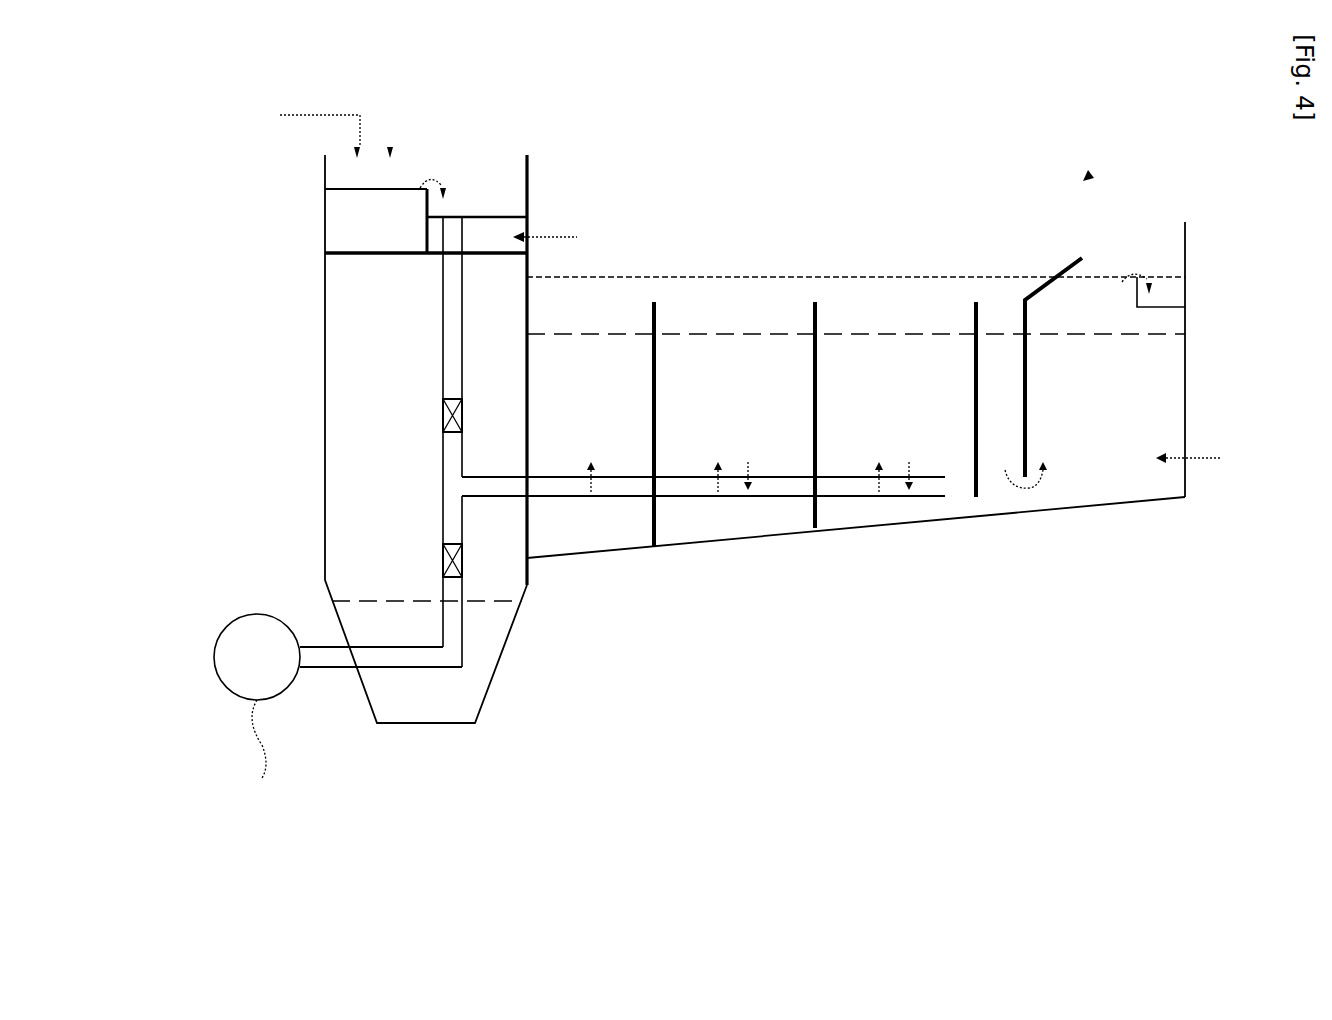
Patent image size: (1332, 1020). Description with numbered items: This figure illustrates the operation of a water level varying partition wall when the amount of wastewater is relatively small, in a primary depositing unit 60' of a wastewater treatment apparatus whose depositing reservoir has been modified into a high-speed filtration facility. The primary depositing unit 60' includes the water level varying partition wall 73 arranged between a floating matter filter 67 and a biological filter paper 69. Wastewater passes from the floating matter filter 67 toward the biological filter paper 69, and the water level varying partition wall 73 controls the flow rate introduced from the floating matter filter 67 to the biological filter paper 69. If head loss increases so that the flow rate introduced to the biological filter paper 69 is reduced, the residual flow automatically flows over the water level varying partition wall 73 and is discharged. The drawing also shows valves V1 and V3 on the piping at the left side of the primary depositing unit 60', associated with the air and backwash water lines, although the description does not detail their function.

The primary depositing unit 60' is at (677, 446).
The water level varying partition wall 73 is at (1060, 262).
The biological filter paper 69 is at (1105, 449).
The floating matter filter 67 is at (980, 597).
The valve V1 is at (440, 415).
The valve V3 is at (440, 558).